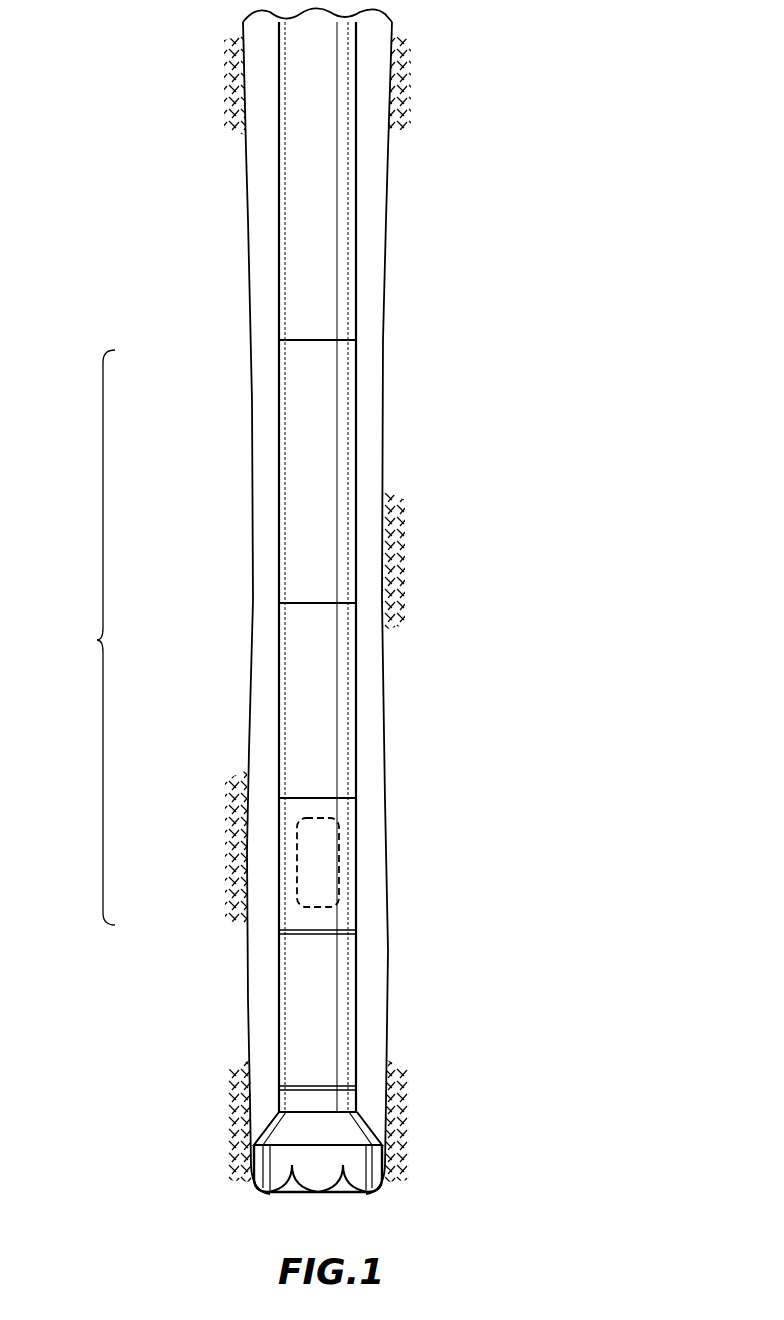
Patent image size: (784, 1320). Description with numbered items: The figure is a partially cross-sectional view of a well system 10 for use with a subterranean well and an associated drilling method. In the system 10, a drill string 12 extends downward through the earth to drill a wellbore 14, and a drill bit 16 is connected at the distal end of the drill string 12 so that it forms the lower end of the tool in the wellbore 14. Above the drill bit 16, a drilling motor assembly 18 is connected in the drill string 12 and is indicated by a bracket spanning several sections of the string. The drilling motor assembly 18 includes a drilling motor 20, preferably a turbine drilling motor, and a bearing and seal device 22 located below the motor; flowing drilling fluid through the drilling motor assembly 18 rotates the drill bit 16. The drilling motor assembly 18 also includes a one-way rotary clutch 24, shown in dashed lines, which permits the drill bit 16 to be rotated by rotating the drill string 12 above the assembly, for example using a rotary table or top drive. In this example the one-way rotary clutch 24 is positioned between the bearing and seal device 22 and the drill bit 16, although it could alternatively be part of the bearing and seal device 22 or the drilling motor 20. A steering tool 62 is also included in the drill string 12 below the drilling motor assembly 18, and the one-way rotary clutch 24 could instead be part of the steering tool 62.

The system 10 is at (617, 82).
The drill string 12 is at (277, 217).
The wellbore 14 is at (390, 220).
The drill bit 16 is at (355, 1130).
The drilling motor assembly 18 is at (97, 640).
The drilling motor 20 is at (279, 450).
The bearing and seal device 22 is at (357, 683).
The one-way rotary clutch 24 is at (340, 850).
The steering tool 62 is at (357, 971).